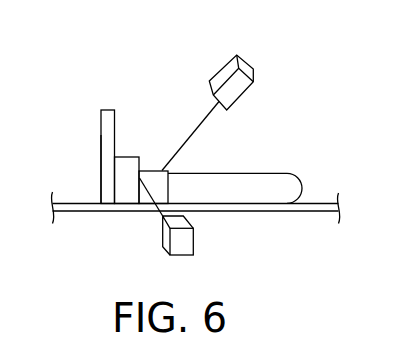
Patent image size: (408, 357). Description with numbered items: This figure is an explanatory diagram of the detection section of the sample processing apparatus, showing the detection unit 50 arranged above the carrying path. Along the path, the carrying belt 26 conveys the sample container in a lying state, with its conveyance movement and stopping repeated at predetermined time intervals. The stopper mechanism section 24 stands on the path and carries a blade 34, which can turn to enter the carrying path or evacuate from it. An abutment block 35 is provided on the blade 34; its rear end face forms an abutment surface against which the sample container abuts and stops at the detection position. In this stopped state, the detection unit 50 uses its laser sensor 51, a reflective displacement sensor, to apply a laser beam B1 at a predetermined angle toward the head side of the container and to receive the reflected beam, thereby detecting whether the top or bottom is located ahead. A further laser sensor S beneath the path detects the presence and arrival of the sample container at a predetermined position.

The stopper mechanism section 24 is at (106, 108).
The carrying belt 26 is at (73, 209).
The blade 34 is at (106, 132).
The abutment block 35 is at (128, 157).
The detection unit 50 is at (172, 122).
The laser sensor 51 is at (225, 61).
The laser beam B1 is at (193, 132).
The laser sensor S is at (163, 247).